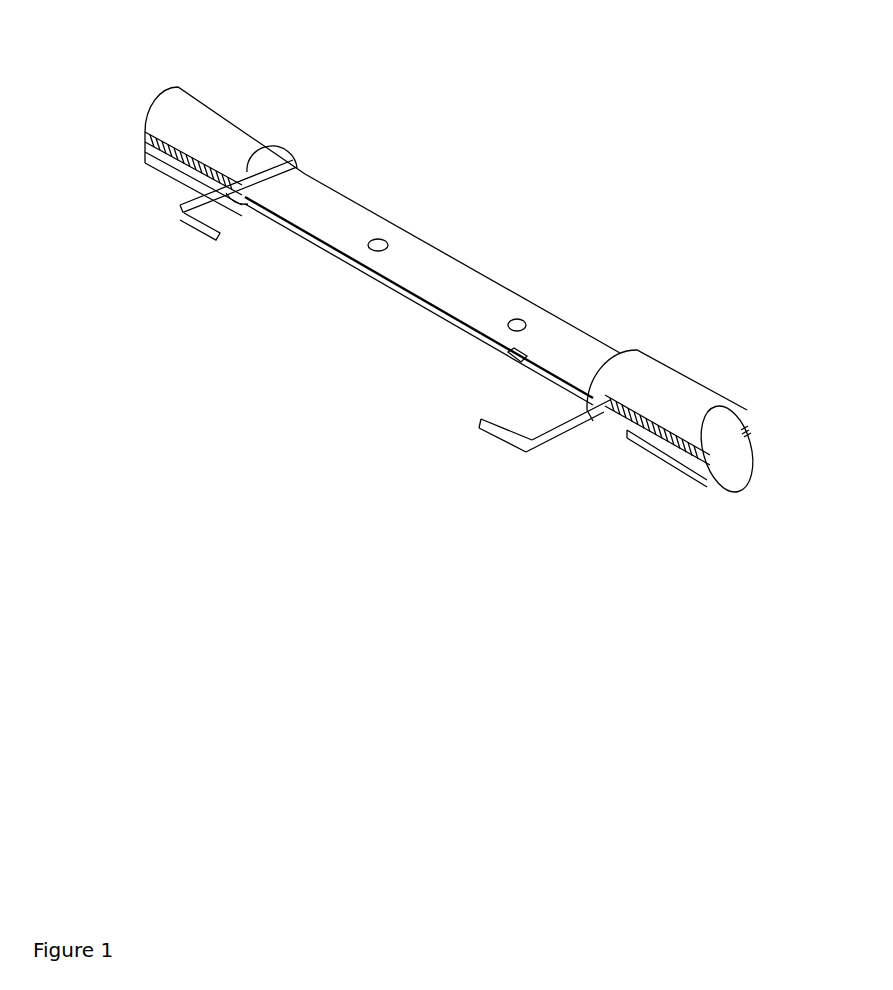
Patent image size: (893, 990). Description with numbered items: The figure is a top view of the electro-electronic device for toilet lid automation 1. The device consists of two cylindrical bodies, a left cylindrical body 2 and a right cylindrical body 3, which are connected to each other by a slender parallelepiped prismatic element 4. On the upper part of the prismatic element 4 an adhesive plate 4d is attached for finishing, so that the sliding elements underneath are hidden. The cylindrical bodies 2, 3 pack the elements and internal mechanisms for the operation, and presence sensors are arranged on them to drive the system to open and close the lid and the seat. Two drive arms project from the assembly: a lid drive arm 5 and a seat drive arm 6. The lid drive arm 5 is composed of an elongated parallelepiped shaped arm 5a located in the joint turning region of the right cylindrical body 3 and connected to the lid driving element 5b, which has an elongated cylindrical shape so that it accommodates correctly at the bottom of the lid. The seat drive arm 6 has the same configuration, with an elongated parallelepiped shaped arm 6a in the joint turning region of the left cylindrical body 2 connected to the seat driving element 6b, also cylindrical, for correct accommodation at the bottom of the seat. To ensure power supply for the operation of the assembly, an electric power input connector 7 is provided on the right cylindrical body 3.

The electro-electronic device for toilet lid automation 1 is at (449, 278).
The left cylindrical body 2 is at (171, 139).
The right cylindrical body 3 is at (725, 402).
The slender parallelepiped prismatic element 4 is at (432, 242).
The adhesive plate 4d is at (414, 231).
The lid drive arm 5 is at (501, 467).
The elongated parallelepiped shaped arm of the lid drive arm 5a is at (590, 431).
The lid driving element 5b is at (472, 423).
The seat drive arm 6 is at (196, 266).
The elongated parallelepiped shaped arm of the seat drive arm 6a is at (183, 197).
The seat driving element 6b is at (195, 238).
The electric power input connector 7 is at (755, 435).